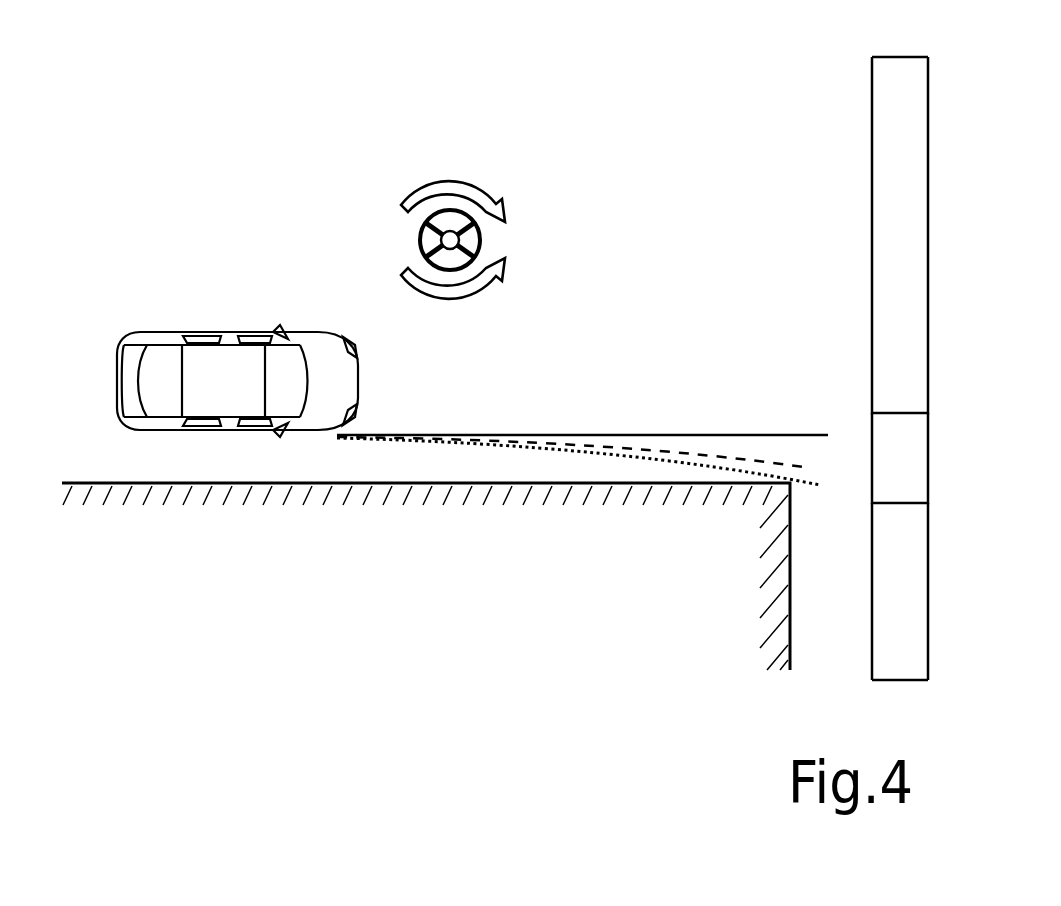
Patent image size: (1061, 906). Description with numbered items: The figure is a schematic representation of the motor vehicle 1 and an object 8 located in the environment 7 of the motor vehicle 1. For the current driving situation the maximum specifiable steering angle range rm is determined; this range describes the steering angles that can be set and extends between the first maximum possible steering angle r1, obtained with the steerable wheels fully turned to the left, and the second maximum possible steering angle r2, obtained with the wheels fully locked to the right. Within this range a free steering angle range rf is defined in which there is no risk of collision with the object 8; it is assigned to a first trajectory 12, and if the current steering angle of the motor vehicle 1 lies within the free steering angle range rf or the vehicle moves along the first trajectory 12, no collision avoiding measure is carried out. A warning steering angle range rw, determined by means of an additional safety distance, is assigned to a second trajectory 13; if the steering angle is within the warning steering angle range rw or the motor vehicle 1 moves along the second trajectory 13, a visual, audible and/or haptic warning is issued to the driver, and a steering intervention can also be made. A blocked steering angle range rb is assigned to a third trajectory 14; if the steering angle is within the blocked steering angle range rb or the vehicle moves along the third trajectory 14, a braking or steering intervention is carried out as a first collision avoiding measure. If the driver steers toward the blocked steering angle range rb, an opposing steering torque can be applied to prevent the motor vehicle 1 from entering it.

The motor vehicle 1 is at (245, 332).
The environment 7 is at (250, 468).
The object 8 is at (415, 497).
The first trajectory 12 is at (660, 435).
The second trajectory 13 is at (718, 457).
The third trajectory 14 is at (763, 473).
The first maximum possible steering angle r1 is at (928, 57).
The free steering angle range rf is at (928, 275).
The maximum specifiable steering angle range rm is at (960, 361).
The warning steering angle range rw is at (928, 453).
The blocked steering angle range rb is at (928, 548).
The second maximum possible steering angle r2 is at (928, 680).